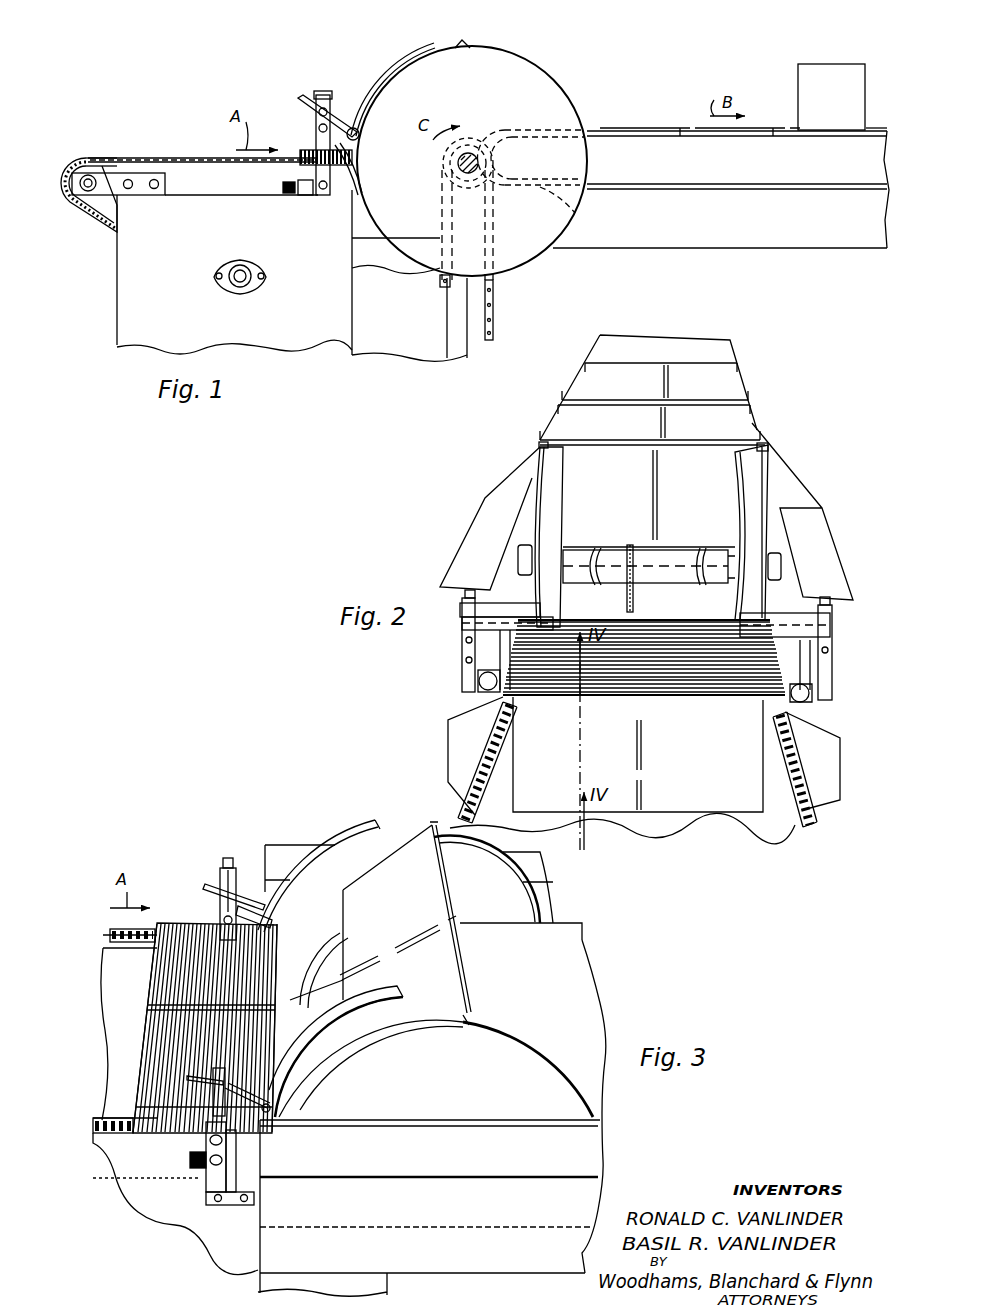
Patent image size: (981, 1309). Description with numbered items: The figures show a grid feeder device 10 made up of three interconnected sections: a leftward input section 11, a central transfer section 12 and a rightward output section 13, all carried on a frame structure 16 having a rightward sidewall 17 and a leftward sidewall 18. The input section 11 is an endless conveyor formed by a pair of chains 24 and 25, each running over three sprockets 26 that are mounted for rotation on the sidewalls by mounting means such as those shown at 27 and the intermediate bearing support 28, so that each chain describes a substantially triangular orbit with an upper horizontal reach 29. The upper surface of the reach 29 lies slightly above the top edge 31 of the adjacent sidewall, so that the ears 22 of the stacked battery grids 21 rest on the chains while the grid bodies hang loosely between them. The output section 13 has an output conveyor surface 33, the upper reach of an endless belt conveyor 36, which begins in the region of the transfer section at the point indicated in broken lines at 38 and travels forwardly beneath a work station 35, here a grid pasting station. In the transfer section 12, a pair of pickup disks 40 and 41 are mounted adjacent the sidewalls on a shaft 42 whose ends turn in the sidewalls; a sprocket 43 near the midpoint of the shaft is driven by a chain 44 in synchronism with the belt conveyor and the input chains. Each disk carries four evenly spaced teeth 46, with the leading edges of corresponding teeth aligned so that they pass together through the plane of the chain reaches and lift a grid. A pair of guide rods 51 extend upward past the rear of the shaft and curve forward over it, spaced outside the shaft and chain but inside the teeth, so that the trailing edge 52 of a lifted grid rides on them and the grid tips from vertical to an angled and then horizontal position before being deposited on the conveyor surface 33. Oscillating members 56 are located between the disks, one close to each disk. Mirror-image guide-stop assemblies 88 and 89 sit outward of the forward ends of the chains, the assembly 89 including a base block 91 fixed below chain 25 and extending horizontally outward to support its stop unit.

In FIG. 1, the grid feeder device 10 is at (222, 55).
In FIG. 2, the grid feeder device 10 is at (452, 501).
In FIG. 1, the input section 11 is at (162, 108).
In FIG. 2, the input section 11 is at (432, 786).
In FIG. 1, the transfer section 12 is at (463, 36).
In FIG. 2, the transfer section 12 is at (452, 533).
In FIG. 1, the output section 13 is at (676, 95).
In FIG. 2, the output section 13 is at (552, 386).
In FIG. 1, the frame structure 16 is at (318, 356).
In FIG. 1, the rightward sidewall 17 is at (150, 336).
In FIG. 2, the rightward sidewall 17 is at (836, 533).
In FIG. 3, the rightward sidewall 17 is at (138, 1172).
In FIG. 1, the leftward sidewall 18 is at (746, 235).
In FIG. 2, the leftward sidewall 18 is at (450, 563).
In FIG. 3, the leftward sidewall 18 is at (118, 962).
In FIG. 1, the battery grids 21 is at (305, 150).
In FIG. 2, the battery grids 21 is at (702, 477).
In FIG. 3, the battery grids 21 is at (140, 1038).
In FIG. 1, the ear 22 is at (471, 48).
In FIG. 2, the ear 22 is at (800, 740).
In FIG. 3, the ear 22 is at (455, 962).
In FIG. 1, the chain 24 is at (92, 212).
In FIG. 2, the chain 24 is at (797, 742).
In FIG. 3, the chain 24 is at (120, 1132).
In FIG. 2, the chain 25 is at (468, 770).
In FIG. 3, the chain 25 is at (113, 938).
In FIG. 1, the sprockets 26 is at (88, 165).
In FIG. 1, the sprocket mounting means 27 is at (115, 178).
In FIG. 1, the intermediate bearing support 28 is at (228, 290).
In FIG. 1, the upper reach 29 is at (176, 158).
In FIG. 2, the upper reach 29 is at (797, 773).
In FIG. 1, the top edge 31 is at (208, 158).
In FIG. 1, the output conveyor surface 33 is at (577, 130).
In FIG. 2, the output conveyor surface 33 is at (737, 360).
In FIG. 3, the output conveyor surface 33 is at (566, 932).
In FIG. 1, the work station 35 is at (845, 72).
In FIG. 1, the endless belt conveyor 36 is at (684, 188).
In FIG. 2, the endless belt conveyor 36 is at (738, 347).
In FIG. 3, the endless belt conveyor 36 is at (590, 930).
In FIG. 1, the rearward end region of belt conveyor 38 is at (572, 216).
In FIG. 2, the pickup disk 40 is at (765, 483).
In FIG. 3, the pickup disk 40 is at (484, 1084).
In FIG. 1, the pickup disk 41 is at (528, 75).
In FIG. 2, the pickup disk 41 is at (540, 483).
In FIG. 3, the pickup disk 41 is at (510, 892).
In FIG. 1, the shaft 42 is at (480, 157).
In FIG. 2, the shaft 42 is at (672, 553).
In FIG. 1, the sprocket 43 is at (473, 140).
In FIG. 1, the drive chain 44 is at (497, 293).
In FIG. 2, the drive chain 44 is at (640, 600).
In FIG. 1, the teeth 46 is at (456, 46).
In FIG. 3, the teeth 46 is at (450, 1018).
In FIG. 2, the guide rods 51 is at (600, 548).
In FIG. 3, the guide rods 51 is at (330, 945).
In FIG. 2, the trailing edge 52 is at (575, 548).
In FIG. 3, the trailing edge 52 is at (335, 908).
In FIG. 3, the oscillating members 56 is at (290, 1005).
In FIG. 2, the guide-stop assembly 88 is at (836, 626).
In FIG. 3, the guide-stop assembly 88 is at (200, 1202).
In FIG. 2, the guide-stop assembly 89 is at (455, 632).
In FIG. 3, the guide-stop assembly 89 is at (228, 856).
In FIG. 3, the base block 91 is at (230, 1210).